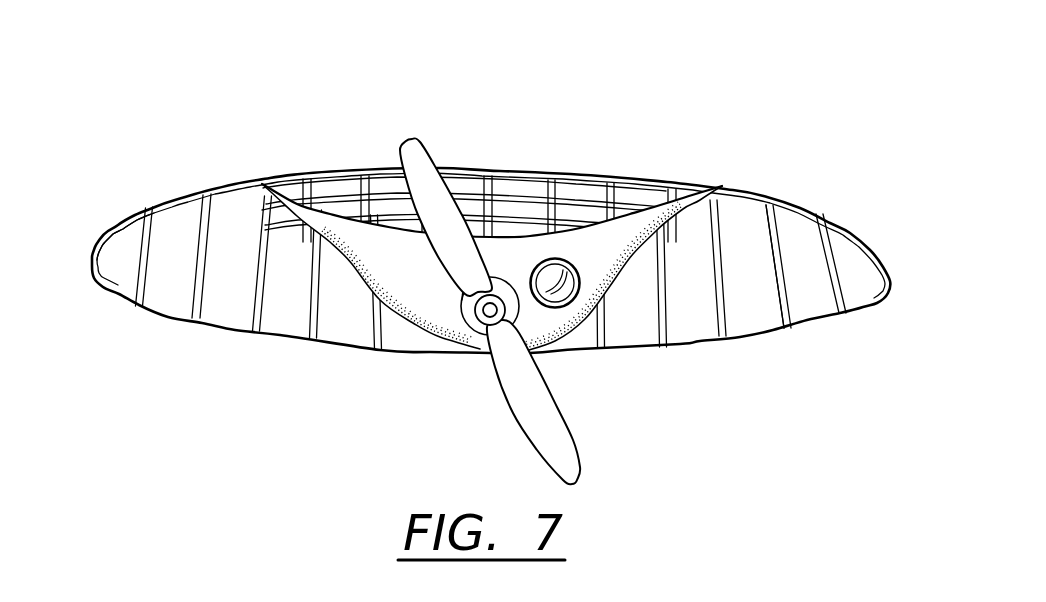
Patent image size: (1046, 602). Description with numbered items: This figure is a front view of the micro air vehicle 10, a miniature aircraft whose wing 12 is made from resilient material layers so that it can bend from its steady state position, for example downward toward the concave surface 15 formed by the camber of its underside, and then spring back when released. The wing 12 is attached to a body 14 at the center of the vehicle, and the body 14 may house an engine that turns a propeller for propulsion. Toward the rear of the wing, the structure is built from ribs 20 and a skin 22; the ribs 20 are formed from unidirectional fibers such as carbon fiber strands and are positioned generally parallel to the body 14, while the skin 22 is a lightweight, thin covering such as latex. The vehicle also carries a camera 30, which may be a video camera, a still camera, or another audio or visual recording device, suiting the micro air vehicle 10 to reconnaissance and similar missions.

The micro air vehicle 10 is at (506, 276).
The wing 12 is at (842, 204).
The body 14 is at (442, 322).
The concave surface 15 is at (740, 291).
The ribs 20 is at (257, 291).
The skin 22 is at (172, 265).
The camera 30 is at (566, 292).